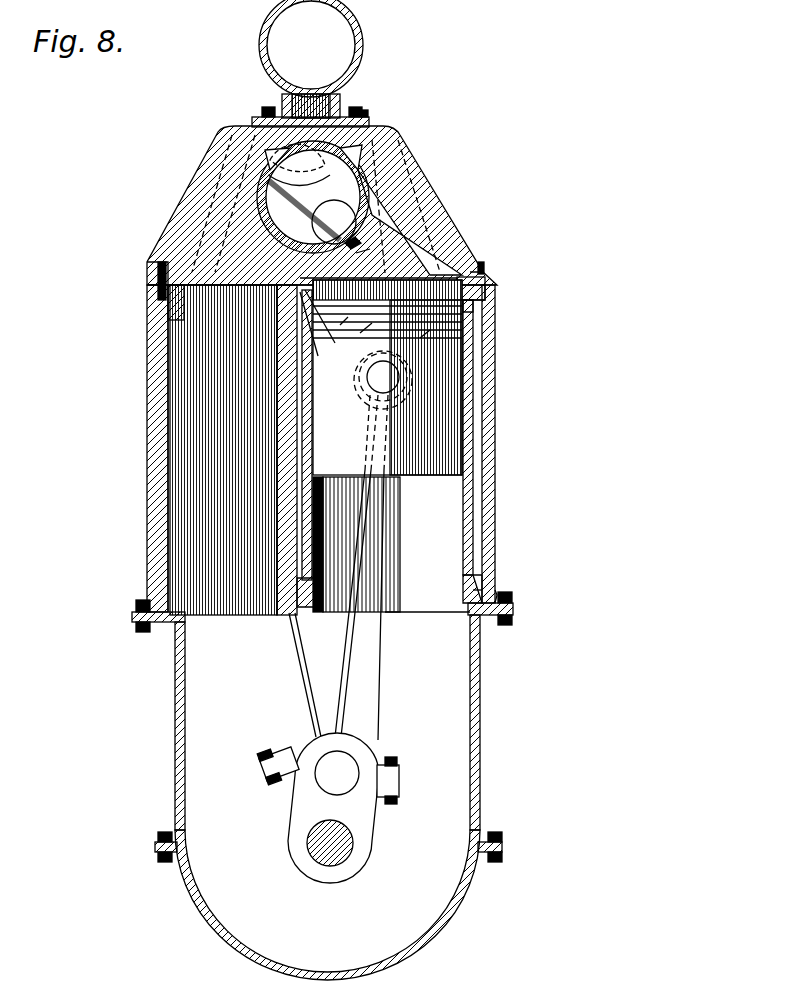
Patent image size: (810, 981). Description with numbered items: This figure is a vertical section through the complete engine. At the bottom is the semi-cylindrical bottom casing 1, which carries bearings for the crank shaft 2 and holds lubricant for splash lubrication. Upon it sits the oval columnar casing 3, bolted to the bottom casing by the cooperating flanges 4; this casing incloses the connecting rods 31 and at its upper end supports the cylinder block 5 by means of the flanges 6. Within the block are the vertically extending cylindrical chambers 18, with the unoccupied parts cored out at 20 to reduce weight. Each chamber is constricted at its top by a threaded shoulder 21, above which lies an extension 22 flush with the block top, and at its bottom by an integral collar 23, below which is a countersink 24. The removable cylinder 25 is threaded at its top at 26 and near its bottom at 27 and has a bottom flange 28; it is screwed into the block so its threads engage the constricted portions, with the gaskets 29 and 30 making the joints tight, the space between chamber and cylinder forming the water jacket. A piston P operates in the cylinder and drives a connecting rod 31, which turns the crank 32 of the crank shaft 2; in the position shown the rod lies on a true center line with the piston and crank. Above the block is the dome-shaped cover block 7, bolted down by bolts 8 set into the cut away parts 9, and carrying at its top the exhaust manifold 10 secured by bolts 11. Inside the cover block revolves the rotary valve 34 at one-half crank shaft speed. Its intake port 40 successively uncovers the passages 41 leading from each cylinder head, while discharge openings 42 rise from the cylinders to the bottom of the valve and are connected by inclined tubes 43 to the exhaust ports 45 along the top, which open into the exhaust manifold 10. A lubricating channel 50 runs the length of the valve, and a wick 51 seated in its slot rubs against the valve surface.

The bottom casing 1 is at (200, 918).
The crank shaft 2 is at (325, 853).
The columnar casing 3 is at (176, 764).
The flanges 4 is at (156, 848).
The cylinder block 5 is at (488, 432).
The flanges 6 is at (136, 620).
The cover block 7 is at (217, 172).
The bolts 8 is at (160, 266).
The cut away parts 9 is at (176, 258).
The exhaust manifold 10 is at (358, 42).
The bolts 11 is at (262, 108).
The cylindrical chambers 18 is at (476, 390).
The cored out parts 20 is at (182, 350).
The threaded shoulders 21 is at (476, 306).
The extensions 22 is at (482, 284).
The collars 23 is at (482, 592).
The countersinks 24 is at (303, 616).
The cylinders 25 is at (472, 490).
The top threads 26 is at (317, 332).
The bottom threads 27 is at (480, 580).
The bottom flanges 28 is at (480, 616).
The gasket 29 is at (325, 323).
The gasket 30 is at (496, 600).
The connecting rods 31 is at (294, 680).
The crank 32 is at (368, 824).
The rotary valve 34 is at (364, 112).
The intake port 40 is at (358, 180).
The passages 41 is at (250, 132).
The discharge openings 42 is at (334, 222).
The tubes 43 is at (304, 192).
The exhaust ports 45 is at (313, 102).
The channel 50 is at (403, 222).
The wick 51 is at (369, 253).
The pistons P is at (466, 358).